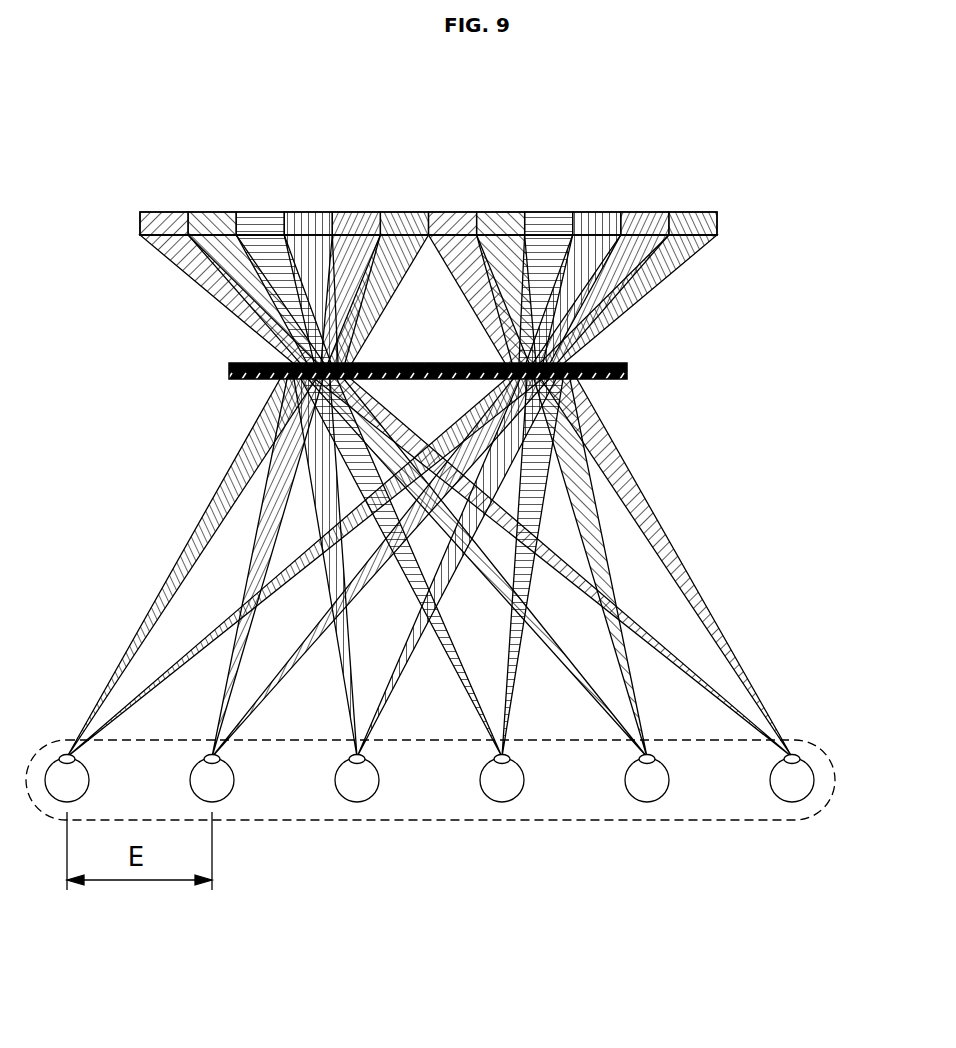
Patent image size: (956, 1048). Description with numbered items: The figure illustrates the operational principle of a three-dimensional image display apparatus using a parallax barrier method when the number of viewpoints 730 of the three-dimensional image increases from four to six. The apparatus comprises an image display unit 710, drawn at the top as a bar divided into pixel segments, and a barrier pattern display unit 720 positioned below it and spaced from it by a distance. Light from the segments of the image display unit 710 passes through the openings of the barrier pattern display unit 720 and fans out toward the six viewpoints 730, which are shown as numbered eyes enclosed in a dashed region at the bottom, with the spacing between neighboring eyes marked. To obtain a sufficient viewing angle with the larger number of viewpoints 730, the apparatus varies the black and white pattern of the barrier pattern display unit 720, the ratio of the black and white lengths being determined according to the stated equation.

The image display unit 710 is at (717, 221).
The barrier pattern display unit 720 is at (627, 371).
The viewpoints 730 is at (812, 740).